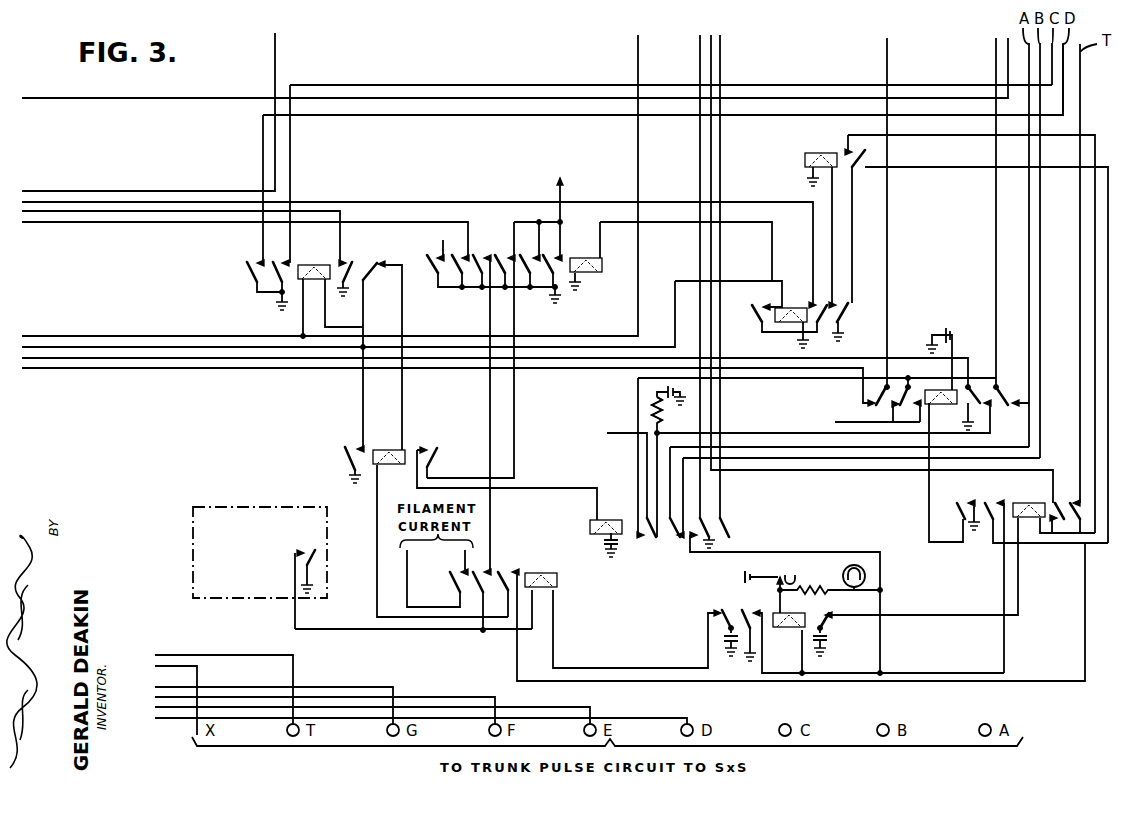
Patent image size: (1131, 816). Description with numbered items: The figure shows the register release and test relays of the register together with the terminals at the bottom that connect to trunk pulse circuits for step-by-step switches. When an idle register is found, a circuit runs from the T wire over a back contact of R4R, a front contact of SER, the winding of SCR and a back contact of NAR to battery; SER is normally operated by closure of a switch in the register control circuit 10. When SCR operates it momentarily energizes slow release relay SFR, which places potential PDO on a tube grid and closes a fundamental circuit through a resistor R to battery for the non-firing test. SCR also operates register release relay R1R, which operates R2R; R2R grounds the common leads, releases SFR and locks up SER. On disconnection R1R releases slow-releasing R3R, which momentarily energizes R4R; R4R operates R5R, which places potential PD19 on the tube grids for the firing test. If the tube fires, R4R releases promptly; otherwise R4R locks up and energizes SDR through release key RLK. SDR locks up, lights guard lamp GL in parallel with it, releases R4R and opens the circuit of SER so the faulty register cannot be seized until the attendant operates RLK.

The register control circuit 10 is at (200, 507).
The relay NAR is at (313, 264).
The relay R2R is at (582, 257).
The relay R3R is at (821, 152).
The register release relay R1R is at (794, 306).
The relay SCR is at (386, 449).
The relay R5R is at (945, 404).
The slow release relay SFR is at (610, 518).
The relay SER is at (541, 571).
The relay SDR is at (795, 612).
The relay R4R is at (1029, 502).
The release key RLK is at (767, 570).
The guard lamp GL is at (842, 576).
The potential PD19 is at (852, 422).
The potential PDO is at (606, 434).
The resistor R is at (664, 411).